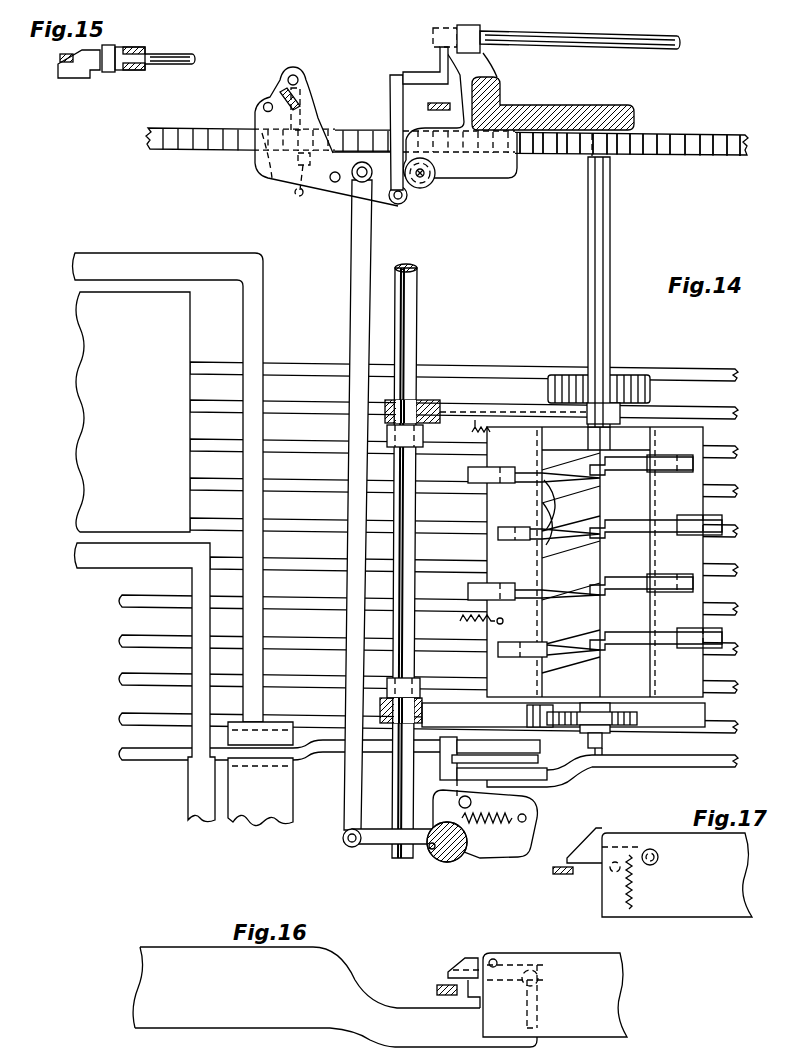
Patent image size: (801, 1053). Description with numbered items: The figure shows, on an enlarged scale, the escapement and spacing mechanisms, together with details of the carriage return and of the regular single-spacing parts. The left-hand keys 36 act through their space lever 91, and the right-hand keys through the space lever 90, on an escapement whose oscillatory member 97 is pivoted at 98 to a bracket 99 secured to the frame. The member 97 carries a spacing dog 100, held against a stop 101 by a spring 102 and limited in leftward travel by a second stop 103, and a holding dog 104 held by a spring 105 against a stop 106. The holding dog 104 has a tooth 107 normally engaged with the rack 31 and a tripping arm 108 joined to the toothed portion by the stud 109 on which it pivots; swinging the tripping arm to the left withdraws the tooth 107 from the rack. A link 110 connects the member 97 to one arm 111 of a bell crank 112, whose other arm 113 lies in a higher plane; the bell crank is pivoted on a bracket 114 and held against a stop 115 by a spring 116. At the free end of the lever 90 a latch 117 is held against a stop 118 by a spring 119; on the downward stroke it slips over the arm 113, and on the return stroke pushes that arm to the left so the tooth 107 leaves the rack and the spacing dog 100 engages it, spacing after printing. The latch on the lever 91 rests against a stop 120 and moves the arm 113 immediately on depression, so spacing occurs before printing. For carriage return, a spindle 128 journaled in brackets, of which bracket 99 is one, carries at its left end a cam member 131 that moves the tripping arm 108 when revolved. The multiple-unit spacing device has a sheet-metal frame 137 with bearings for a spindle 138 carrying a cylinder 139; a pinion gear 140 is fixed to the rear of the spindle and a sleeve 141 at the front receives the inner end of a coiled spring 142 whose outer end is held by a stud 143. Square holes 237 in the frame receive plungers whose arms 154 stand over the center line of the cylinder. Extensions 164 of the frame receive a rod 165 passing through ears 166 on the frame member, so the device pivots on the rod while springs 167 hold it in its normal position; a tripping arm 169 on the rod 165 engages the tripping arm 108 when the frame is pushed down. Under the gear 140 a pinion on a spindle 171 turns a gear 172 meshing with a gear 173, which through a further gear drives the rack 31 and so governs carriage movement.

In FIG. 14, the rack 31 is at (150, 140).
In FIG. 14, the left hand keys 36 is at (183, 539).
In FIG. 14, the space lever 90 is at (680, 769).
In FIG. 17, the space lever 90 is at (677, 875).
In FIG. 16, the space lever 90 is at (555, 995).
In FIG. 14, the space lever 91 is at (310, 800).
In FIG. 16, the space lever 91 is at (335, 997).
In FIG. 14, the oscillatory member 97 is at (255, 115).
In FIG. 14, the pivot 98 is at (427, 188).
In FIG. 15, the bracket 99 is at (146, 47).
In FIG. 14, the bracket 99 is at (482, 33).
In FIG. 14, the spacing dog 100 is at (312, 125).
In FIG. 14, the stop 101 is at (302, 105).
In FIG. 14, the spring 102 is at (305, 80).
In FIG. 14, the second stop 103 is at (267, 103).
In FIG. 14, the holding dog 104 is at (349, 208).
In FIG. 14, the spring 105 is at (312, 197).
In FIG. 14, the stop 106 is at (336, 168).
In FIG. 14, the tooth 107 is at (262, 160).
In FIG. 15, the tripping arm 108 is at (58, 58).
In FIG. 14, the tripping arm 108 is at (392, 90).
In FIG. 14, the stud 109 is at (400, 205).
In FIG. 14, the link 110 is at (352, 830).
In FIG. 14, the arm 111 is at (378, 846).
In FIG. 14, the bell crank 112 is at (432, 850).
In FIG. 14, the arm 113 is at (440, 770).
In FIG. 17, the arm 113 is at (561, 875).
In FIG. 16, the arm 113 is at (440, 985).
In FIG. 14, the bracket 114 is at (457, 852).
In FIG. 14, the stop 115 is at (470, 798).
In FIG. 14, the spring 116 is at (500, 838).
In FIG. 17, the latch 117 is at (597, 827).
In FIG. 16, the latch 117 is at (467, 958).
In FIG. 17, the stop 118 is at (614, 872).
In FIG. 17, the spring 119 is at (636, 882).
In FIG. 16, the spring 119 is at (465, 997).
In FIG. 16, the stop 120 is at (496, 962).
In FIG. 15, the spindle 128 is at (178, 66).
In FIG. 14, the spindle 128 is at (673, 50).
In FIG. 15, the cam member 131 is at (88, 80).
In FIG. 14, the cam member 131 is at (421, 77).
In FIG. 14, the frame 137 is at (697, 437).
In FIG. 14, the spindle 138 is at (600, 755).
In FIG. 14, the cylinder 139 is at (632, 563).
In FIG. 14, the pinion gear 140 is at (651, 393).
In FIG. 14, the sleeve 141 is at (608, 728).
In FIG. 14, the coiled spring 142 is at (640, 717).
In FIG. 14, the stud 143 is at (546, 727).
In FIG. 14, the arms 154 is at (545, 505).
In FIG. 14, the extensions 164 is at (425, 437).
In FIG. 14, the rod 165 is at (402, 859).
In FIG. 14, the ears 166 is at (427, 402).
In FIG. 14, the springs 167 is at (474, 425).
In FIG. 14, the tripping arm 169 is at (443, 97).
In FIG. 14, the spindle 171 is at (611, 307).
In FIG. 14, the gear 172 is at (616, 152).
In FIG. 14, the gear 173 is at (556, 153).
In FIG. 14, the holes 237 is at (509, 590).